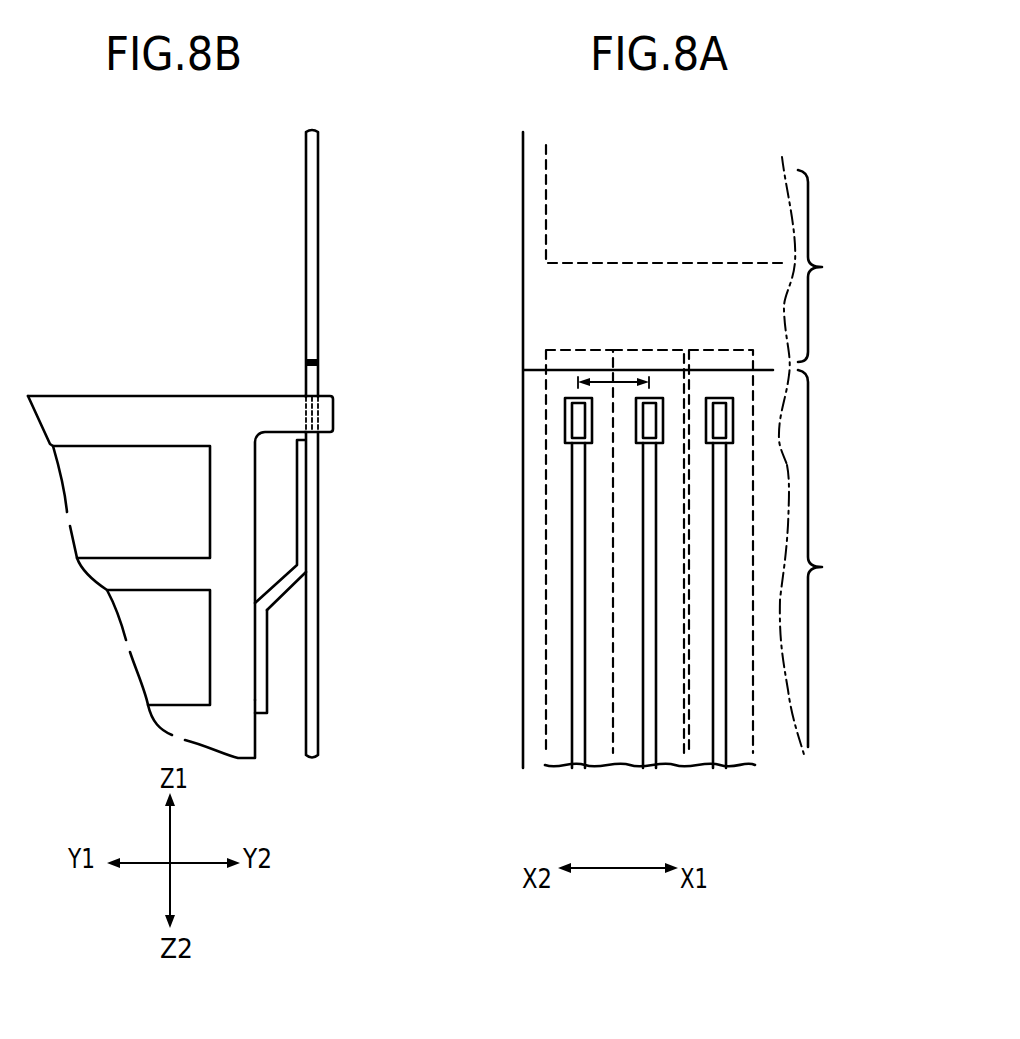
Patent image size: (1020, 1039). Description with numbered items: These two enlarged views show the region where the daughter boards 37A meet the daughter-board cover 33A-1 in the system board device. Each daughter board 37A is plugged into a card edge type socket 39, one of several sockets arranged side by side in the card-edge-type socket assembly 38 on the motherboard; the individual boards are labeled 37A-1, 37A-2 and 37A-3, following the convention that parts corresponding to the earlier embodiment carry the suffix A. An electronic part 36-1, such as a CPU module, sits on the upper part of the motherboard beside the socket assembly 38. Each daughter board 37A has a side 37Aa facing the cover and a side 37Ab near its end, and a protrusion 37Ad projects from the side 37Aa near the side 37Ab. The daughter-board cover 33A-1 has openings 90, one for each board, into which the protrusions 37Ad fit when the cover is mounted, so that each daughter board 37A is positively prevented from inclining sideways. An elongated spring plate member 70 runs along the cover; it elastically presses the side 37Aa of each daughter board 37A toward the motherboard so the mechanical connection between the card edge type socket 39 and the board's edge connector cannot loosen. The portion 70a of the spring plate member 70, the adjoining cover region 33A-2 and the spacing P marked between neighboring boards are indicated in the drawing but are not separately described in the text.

In FIG. 8B, the daughter-board cover 33A-1 is at (320, 638).
In FIG. 8A, the daughter-board cover 33A-1 is at (842, 564).
In FIG. 8B, the second flexible board portion 33A-2 is at (317, 280).
In FIG. 8A, the second flexible board portion 33A-2 is at (841, 311).
In FIG. 8A, the electronic part 36-1 is at (690, 202).
In FIG. 8B, the daughter board 37A is at (125, 392).
In FIG. 8B, the side 37Aa is at (245, 735).
In FIG. 8B, the side 37Ab is at (193, 393).
In FIG. 8B, the protrusion 37Ad is at (333, 413).
In FIG. 8A, the protrusion 37Ad is at (577, 423).
In FIG. 8A, the first terminal 37A-1 is at (573, 750).
In FIG. 8A, the second terminal 37A-2 is at (643, 752).
In FIG. 8A, the third terminal 37A-3 is at (723, 750).
In FIG. 8A, the card-edge-type socket assembly 38 is at (678, 342).
In FIG. 8A, the card edge type socket 39 is at (555, 725).
In FIG. 8B, the spring plate member 70 is at (277, 595).
In FIG. 8B, the extension portion of holding member 70a is at (265, 678).
In FIG. 8B, the opening 90 is at (318, 395).
In FIG. 8A, the opening 90 is at (573, 405).
In FIG. 8A, the terminal pitch P is at (600, 378).